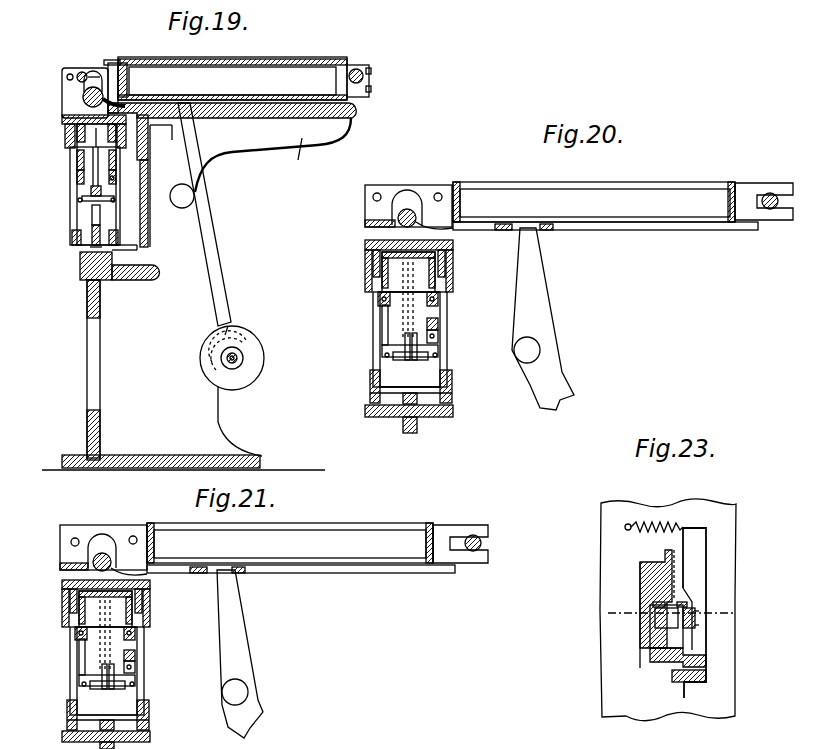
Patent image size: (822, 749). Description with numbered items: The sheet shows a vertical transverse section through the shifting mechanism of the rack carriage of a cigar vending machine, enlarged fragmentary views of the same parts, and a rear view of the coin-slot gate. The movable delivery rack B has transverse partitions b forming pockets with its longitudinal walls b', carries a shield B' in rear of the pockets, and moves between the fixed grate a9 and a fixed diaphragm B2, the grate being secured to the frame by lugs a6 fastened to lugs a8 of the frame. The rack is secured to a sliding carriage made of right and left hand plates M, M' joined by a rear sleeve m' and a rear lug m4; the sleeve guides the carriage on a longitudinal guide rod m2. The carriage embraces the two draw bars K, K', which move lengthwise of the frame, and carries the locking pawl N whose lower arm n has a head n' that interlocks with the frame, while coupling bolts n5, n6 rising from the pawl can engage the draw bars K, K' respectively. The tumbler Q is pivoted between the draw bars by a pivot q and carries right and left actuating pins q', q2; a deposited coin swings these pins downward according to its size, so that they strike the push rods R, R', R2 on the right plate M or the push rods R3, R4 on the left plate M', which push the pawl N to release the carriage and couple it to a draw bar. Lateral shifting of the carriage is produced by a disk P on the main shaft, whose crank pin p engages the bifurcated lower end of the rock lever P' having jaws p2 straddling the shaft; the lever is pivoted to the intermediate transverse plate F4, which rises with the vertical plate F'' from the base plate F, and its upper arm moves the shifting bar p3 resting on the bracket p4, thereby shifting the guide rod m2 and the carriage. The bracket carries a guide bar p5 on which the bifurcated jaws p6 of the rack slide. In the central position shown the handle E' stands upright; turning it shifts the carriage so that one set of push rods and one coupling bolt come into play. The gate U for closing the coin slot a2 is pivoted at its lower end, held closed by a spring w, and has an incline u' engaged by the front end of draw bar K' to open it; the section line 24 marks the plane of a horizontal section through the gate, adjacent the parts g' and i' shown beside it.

In FIG. 19, the movable delivery rack B is at (232, 57).
In FIG. 20, the movable delivery rack B is at (594, 182).
In FIG. 21, the movable delivery rack B is at (290, 530).
In FIG. 19, the shield plate B' is at (195, 54).
In FIG. 19, the fixed diaphragm B2 is at (296, 100).
In FIG. 20, the transverse partitions b is at (563, 207).
In FIG. 21, the transverse partitions b is at (285, 548).
In FIG. 20, the longitudinal walls b' is at (599, 184).
In FIG. 21, the longitudinal walls b' is at (282, 527).
In FIG. 19, the rear sleeve m' is at (89, 73).
In FIG. 20, the rear sleeve m' is at (408, 184).
In FIG. 21, the rear sleeve m' is at (103, 534).
In FIG. 19, the guide rod m2 is at (83, 99).
In FIG. 20, the guide rod m2 is at (398, 224).
In FIG. 21, the guide rod m2 is at (92, 567).
In FIG. 19, the rear lug m4 is at (95, 234).
In FIG. 20, the rear lug m4 is at (410, 376).
In FIG. 19, the grate lugs a6 is at (103, 60).
In FIG. 19, the frame lugs a8 is at (87, 72).
In FIG. 23, the fixed grate a9 is at (722, 520).
In FIG. 23, the coin slot a2 is at (660, 575).
In FIG. 21, the crank pin p is at (483, 544).
In FIG. 19, the disk P is at (244, 358).
In FIG. 19, the rock lever P' is at (205, 214).
In FIG. 20, the rock lever P' is at (543, 319).
In FIG. 21, the rock lever P' is at (244, 654).
In FIG. 19, the jaws p2 is at (216, 350).
In FIG. 19, the shifting bar p3 is at (256, 135).
In FIG. 20, the shifting bar p3 is at (632, 233).
In FIG. 21, the shifting bar p3 is at (352, 576).
In FIG. 19, the bracket p4 is at (299, 160).
In FIG. 19, the longitudinal guide bar p5 is at (371, 79).
In FIG. 20, the longitudinal guide bar p5 is at (772, 208).
In FIG. 20, the bifurcated jaws p6 is at (780, 206).
In FIG. 21, the bifurcated jaws p6 is at (455, 555).
In FIG. 19, the right hand draw bar K is at (97, 179).
In FIG. 20, the right hand draw bar K is at (418, 266).
In FIG. 21, the right hand draw bar K is at (120, 603).
In FIG. 23, the right hand draw bar K is at (625, 626).
In FIG. 19, the left hand draw bar K' is at (46, 138).
In FIG. 20, the left hand draw bar K' is at (353, 271).
In FIG. 21, the left hand draw bar K' is at (56, 608).
In FIG. 23, the left hand draw bar K' is at (692, 593).
In FIG. 19, the right hand carriage plate M is at (117, 187).
In FIG. 20, the right hand carriage plate M is at (437, 281).
In FIG. 21, the right hand carriage plate M is at (132, 620).
In FIG. 19, the left hand carriage plate M' is at (72, 225).
In FIG. 20, the left hand carriage plate M' is at (390, 349).
In FIG. 21, the left hand carriage plate M' is at (88, 683).
In FIG. 19, the locking pawl N is at (82, 268).
In FIG. 20, the locking pawl N is at (400, 420).
In FIG. 21, the locking pawl N is at (150, 738).
In FIG. 19, the tumbler Q is at (86, 192).
In FIG. 20, the tumbler Q is at (386, 347).
In FIG. 21, the tumbler Q is at (83, 677).
In FIG. 21, the tumbler pivot q is at (153, 597).
In FIG. 19, the right hand actuating pin q' is at (129, 165).
In FIG. 20, the right hand actuating pin q' is at (429, 314).
In FIG. 21, the right hand actuating pin q' is at (128, 653).
In FIG. 19, the left hand actuating pin q2 is at (88, 198).
In FIG. 20, the left hand actuating pin q2 is at (395, 358).
In FIG. 21, the left hand actuating pin q2 is at (92, 688).
In FIG. 19, the upper push rod R is at (119, 152).
In FIG. 20, the upper push rod R is at (440, 282).
In FIG. 21, the upper push rod R is at (139, 621).
In FIG. 19, the middle push rod R' is at (138, 168).
In FIG. 20, the middle push rod R' is at (451, 322).
In FIG. 21, the middle push rod R' is at (149, 661).
In FIG. 19, the lowermost push rod R2 is at (126, 185).
In FIG. 20, the lowermost push rod R2 is at (498, 338).
In FIG. 19, the upper left push rod R3 is at (77, 166).
In FIG. 20, the upper left push rod R3 is at (380, 300).
In FIG. 21, the upper left push rod R3 is at (103, 640).
In FIG. 20, the lower left push rod R4 is at (382, 355).
In FIG. 21, the lower left push rod R4 is at (30, 715).
In FIG. 19, the lower arm of pawl n is at (249, 336).
In FIG. 19, the pawl head n' is at (243, 306).
In FIG. 20, the right hand coupling bolt n5 is at (440, 340).
In FIG. 21, the right hand coupling bolt n5 is at (137, 672).
In FIG. 20, the left hand coupling bolt n6 is at (374, 326).
In FIG. 21, the left hand coupling bolt n6 is at (72, 668).
In FIG. 19, the base plate F is at (183, 450).
In FIG. 19, the vertical plate F'' is at (109, 370).
In FIG. 19, the intermediate transverse plate F4 is at (165, 335).
In FIG. 19, the actuating handle E' is at (243, 415).
In FIG. 23, the spring w is at (648, 523).
In FIG. 23, the gate U is at (700, 552).
In FIG. 23, the incline u' is at (725, 624).
In FIG. 23, the block g' is at (660, 650).
In FIG. 23, the plate i' is at (714, 670).
In FIG. 23, the section line 24 is at (687, 614).